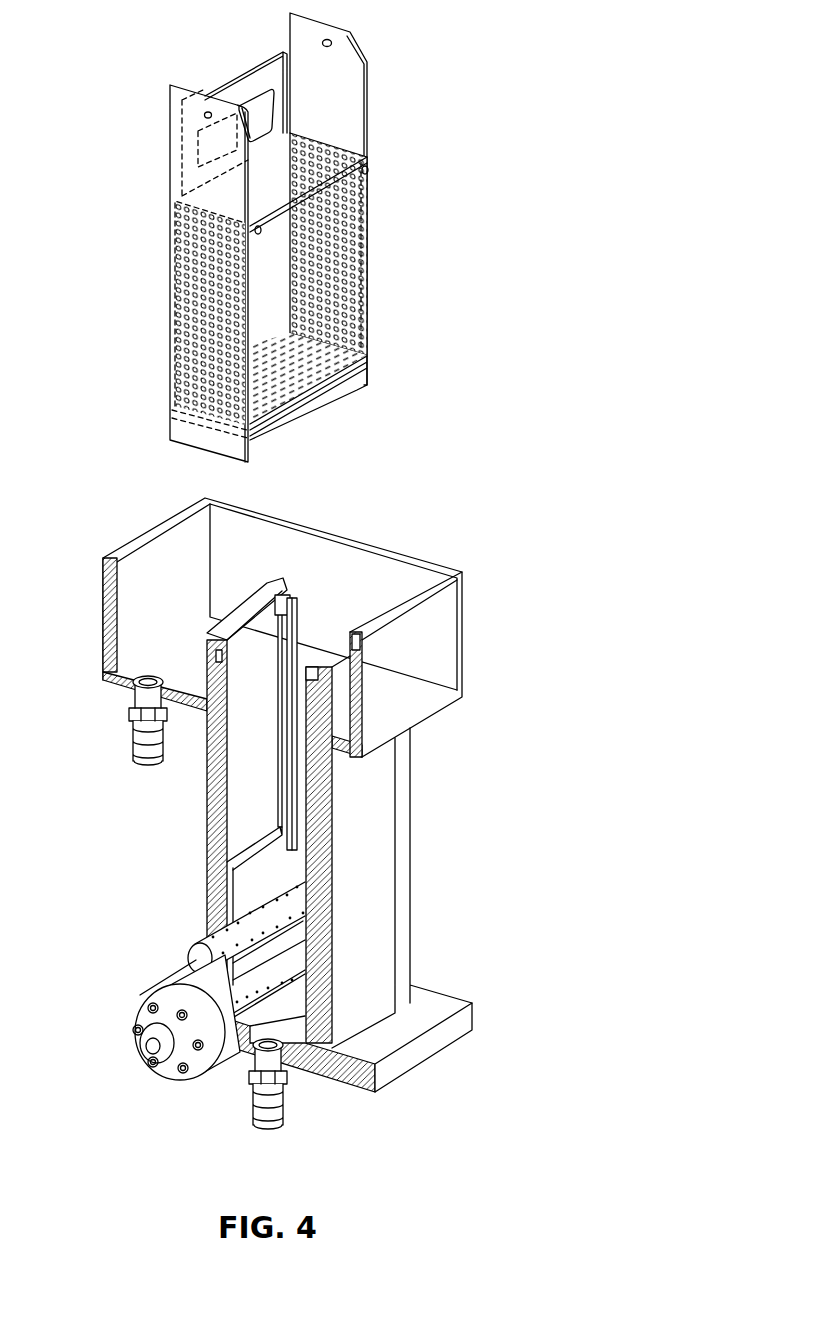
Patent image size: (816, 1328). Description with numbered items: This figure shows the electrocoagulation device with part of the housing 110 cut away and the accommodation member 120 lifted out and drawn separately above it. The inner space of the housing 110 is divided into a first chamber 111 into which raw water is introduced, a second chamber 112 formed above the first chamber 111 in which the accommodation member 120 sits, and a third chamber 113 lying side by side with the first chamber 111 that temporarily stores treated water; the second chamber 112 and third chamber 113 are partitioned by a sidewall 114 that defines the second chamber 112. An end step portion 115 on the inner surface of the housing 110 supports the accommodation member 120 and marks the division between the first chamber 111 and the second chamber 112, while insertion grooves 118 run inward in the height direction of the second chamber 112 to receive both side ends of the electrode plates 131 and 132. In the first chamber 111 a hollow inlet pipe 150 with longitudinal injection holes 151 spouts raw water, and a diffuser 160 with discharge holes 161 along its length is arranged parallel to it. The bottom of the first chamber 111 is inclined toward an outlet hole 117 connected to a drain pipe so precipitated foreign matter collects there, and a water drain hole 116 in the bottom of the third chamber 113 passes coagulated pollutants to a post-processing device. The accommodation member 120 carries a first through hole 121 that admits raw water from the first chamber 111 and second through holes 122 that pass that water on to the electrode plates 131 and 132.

The housing 110 is at (268, 820).
The first chamber 111 is at (260, 878).
The second chamber 112 is at (253, 772).
The third chamber 113 is at (160, 612).
The sidewall 114 is at (200, 648).
The end step portion 115 is at (247, 840).
The water drain hole 116 is at (128, 690).
The outlet hole 117 is at (310, 1075).
The insertion grooves 118 is at (297, 653).
The accommodation member 120 is at (283, 237).
The first through hole 121 is at (337, 383).
The second through hole 122 is at (325, 168).
The electrode plate 131 is at (172, 138).
The electrode plate 132 is at (368, 98).
The inlet pipe 150 is at (158, 1086).
The injection holes 151 is at (332, 968).
The diffuser 160 is at (278, 942).
The discharge holes 161 is at (320, 908).